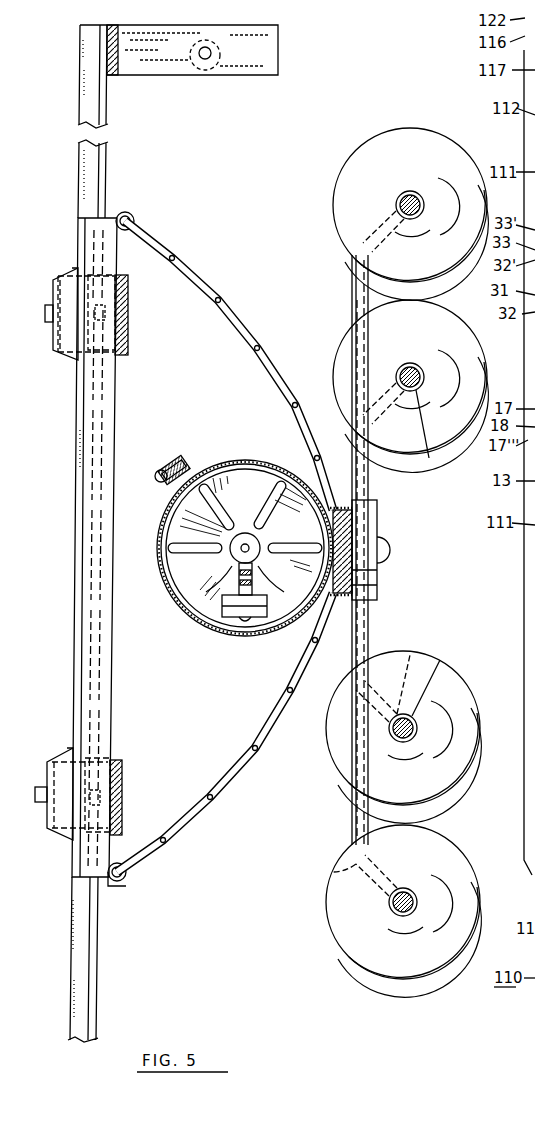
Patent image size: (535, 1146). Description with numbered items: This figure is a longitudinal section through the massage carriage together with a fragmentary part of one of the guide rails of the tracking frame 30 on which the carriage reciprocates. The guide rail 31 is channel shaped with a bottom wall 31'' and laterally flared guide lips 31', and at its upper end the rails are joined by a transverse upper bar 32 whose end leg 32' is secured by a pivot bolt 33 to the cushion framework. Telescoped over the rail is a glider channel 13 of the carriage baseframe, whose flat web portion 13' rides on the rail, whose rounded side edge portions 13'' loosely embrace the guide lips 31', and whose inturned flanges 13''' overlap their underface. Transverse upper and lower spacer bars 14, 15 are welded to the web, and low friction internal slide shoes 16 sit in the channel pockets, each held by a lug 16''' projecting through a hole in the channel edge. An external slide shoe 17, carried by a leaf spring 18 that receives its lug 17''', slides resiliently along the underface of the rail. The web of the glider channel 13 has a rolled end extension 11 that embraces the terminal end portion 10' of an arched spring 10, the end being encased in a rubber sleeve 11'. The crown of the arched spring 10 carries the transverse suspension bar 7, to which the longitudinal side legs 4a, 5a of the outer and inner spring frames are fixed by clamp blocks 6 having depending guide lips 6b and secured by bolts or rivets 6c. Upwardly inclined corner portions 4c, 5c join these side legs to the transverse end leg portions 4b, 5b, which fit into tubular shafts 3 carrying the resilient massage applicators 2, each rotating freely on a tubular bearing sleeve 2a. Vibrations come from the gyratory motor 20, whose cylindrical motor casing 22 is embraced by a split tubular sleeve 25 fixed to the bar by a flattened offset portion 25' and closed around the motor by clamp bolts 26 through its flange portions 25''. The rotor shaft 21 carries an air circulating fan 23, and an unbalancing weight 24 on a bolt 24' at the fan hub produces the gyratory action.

The resilient massage applicator 2 is at (388, 138).
The tubular bearing sleeve 2a is at (418, 218).
The tubular shaft 3 is at (400, 200).
The side leg 4a is at (352, 270).
The end leg portion 4b is at (398, 207).
The upwardly inclined corner portion 4c is at (368, 226).
The side leg 5a is at (369, 495).
The end leg portion 5b is at (435, 553).
The upwardly inclined corner portion 5c is at (392, 456).
The clamp block 6 is at (378, 515).
The guide lip 6b is at (341, 508).
The bolt or rivet 6c is at (389, 548).
The transverse suspension bar 7 is at (347, 595).
The arched spring 10 is at (225, 546).
The terminal end portion 10' is at (153, 546).
The end extension 11 is at (126, 549).
The rubber sleeve 11' is at (150, 546).
The glider channel 13 is at (115, 547).
The web portion 13' is at (130, 621).
The rounded side edge portion 13'' is at (69, 485).
The inturned flange 13''' is at (60, 395).
The upper spacer bar 14 is at (129, 328).
The lower spacer bar 15 is at (123, 770).
The internal slide shoe 16 is at (106, 553).
The lug 16''' is at (135, 546).
The external slide shoe 17 is at (61, 490).
The lug 17''' is at (30, 546).
The leaf spring 18 is at (52, 284).
The gyratory motor 20 is at (237, 462).
The rotor shaft 21 is at (242, 546).
The motor casing 22 is at (213, 617).
The air circulating fan 23 is at (185, 556).
The unbalancing weight 24 is at (249, 620).
The bolt 24' is at (231, 648).
The split tubular sleeve 25 is at (245, 533).
The flattened offset portion 25' is at (386, 573).
The flange portion 25'' is at (159, 469).
The clamp bolt 26 is at (180, 460).
The tracking frame 30 is at (78, 56).
The guide rail 31 is at (78, 542).
The guide lip 31' is at (126, 551).
The bottom wall 31'' is at (58, 713).
The transverse upper bar 32 is at (192, 40).
The end leg 32' is at (299, 44).
The pivot bolt 33 is at (200, 70).